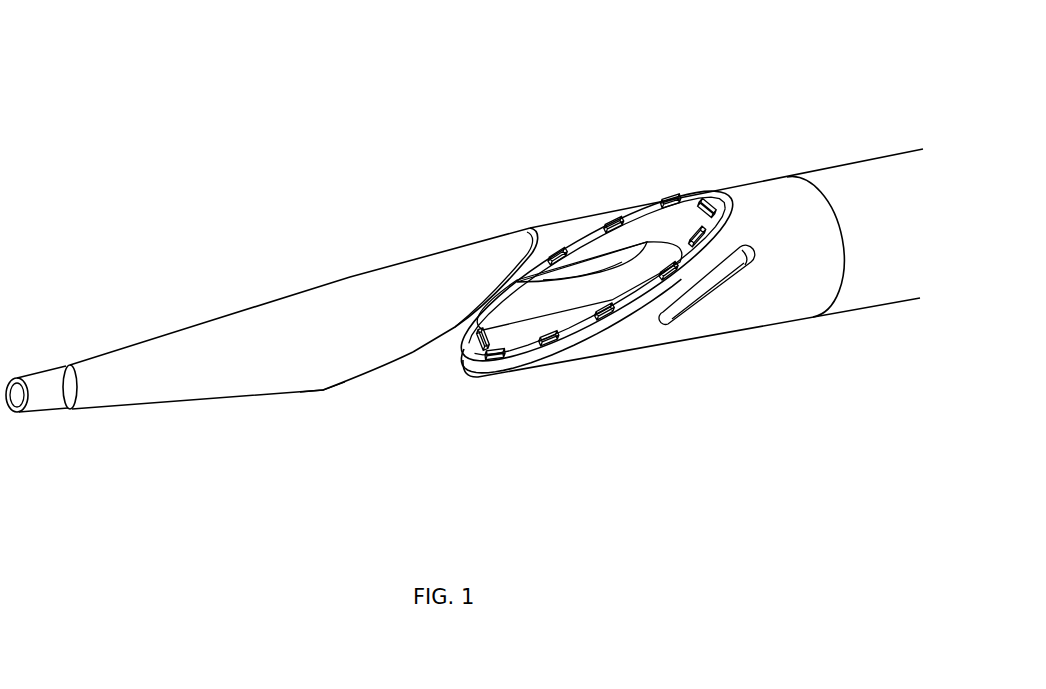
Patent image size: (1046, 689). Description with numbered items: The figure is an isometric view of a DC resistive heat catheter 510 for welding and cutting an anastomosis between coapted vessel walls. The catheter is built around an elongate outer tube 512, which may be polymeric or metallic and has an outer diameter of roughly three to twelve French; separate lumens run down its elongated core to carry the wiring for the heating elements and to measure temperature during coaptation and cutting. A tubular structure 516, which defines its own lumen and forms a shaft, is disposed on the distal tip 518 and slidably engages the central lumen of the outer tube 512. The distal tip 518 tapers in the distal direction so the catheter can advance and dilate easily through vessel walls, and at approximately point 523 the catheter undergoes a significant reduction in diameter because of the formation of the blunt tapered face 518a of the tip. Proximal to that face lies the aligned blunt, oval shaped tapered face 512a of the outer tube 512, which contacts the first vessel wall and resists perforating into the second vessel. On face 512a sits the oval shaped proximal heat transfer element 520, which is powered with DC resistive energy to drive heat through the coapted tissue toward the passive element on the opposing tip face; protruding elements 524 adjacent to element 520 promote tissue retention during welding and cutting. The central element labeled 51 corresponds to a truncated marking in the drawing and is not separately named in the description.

The DC resistive heat catheter 510 is at (767, 124).
The elongate outer tube 512 is at (826, 165).
The blunt tapered face 512a is at (717, 202).
The central cutting element 51 is at (620, 258).
The tubular structure 516 is at (510, 293).
The distal tip 518 is at (272, 365).
The blunt tapered face of distal tip 518a is at (413, 352).
The proximal heat transfer element 520 is at (682, 203).
The point of diameter reduction 523 is at (323, 390).
The protruding elements 524 is at (558, 338).